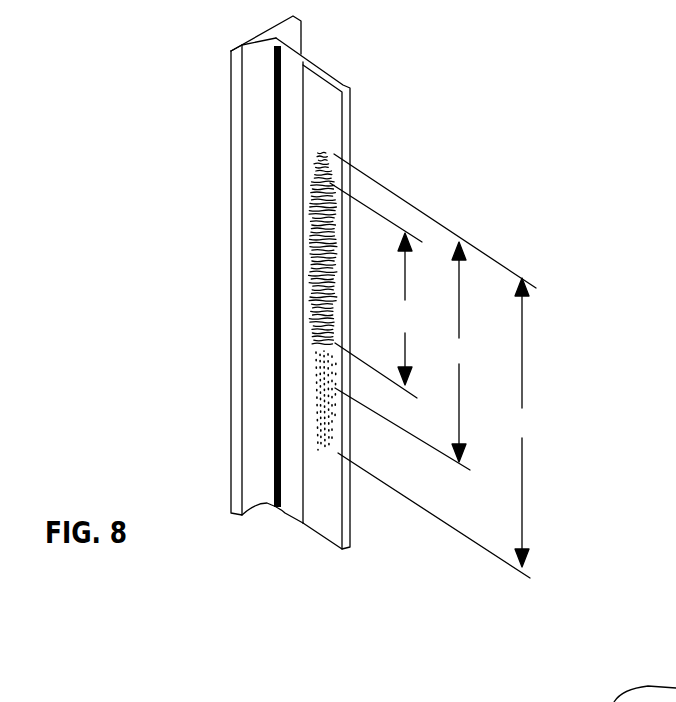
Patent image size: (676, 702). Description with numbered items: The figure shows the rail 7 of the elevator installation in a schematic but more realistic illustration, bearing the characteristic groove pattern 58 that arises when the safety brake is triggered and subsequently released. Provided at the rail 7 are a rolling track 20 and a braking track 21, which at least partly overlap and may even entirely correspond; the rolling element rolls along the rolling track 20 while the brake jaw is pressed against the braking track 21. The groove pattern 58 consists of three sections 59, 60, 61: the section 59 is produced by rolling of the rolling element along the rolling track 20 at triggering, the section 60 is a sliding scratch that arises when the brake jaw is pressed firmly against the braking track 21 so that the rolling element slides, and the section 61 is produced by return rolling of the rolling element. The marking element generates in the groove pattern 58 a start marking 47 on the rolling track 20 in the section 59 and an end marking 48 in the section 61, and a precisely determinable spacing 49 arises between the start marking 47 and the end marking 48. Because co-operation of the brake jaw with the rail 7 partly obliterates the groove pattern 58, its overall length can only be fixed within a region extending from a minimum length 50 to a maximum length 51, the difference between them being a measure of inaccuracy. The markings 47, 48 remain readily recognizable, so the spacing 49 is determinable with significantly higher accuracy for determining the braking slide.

The rail 7 is at (258, 75).
The rolling track 20 is at (310, 493).
The braking track 21 is at (327, 517).
The start marking 47 is at (313, 183).
The end marking 48 is at (312, 343).
The spacing 49 is at (376, 290).
The minimum length 50 is at (435, 312).
The maximum length 51 is at (439, 428).
The groove pattern 58 is at (196, 269).
The section 59 is at (312, 213).
The section 60 is at (312, 287).
The section 61 is at (312, 410).